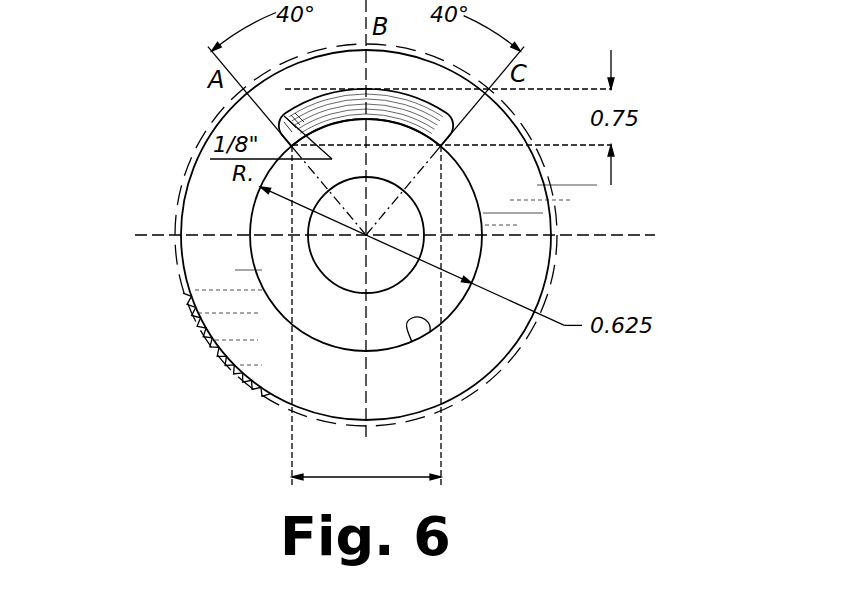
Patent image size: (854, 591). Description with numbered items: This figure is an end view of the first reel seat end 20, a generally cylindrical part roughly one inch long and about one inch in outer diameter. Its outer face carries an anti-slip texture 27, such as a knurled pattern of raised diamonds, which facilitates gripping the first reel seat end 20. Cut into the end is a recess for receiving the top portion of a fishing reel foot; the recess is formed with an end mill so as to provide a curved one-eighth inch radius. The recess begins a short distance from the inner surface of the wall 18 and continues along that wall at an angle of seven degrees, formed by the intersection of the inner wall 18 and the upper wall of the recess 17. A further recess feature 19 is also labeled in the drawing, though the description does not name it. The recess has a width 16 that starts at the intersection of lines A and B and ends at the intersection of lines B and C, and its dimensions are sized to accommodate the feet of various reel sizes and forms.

The width 16 is at (366, 477).
The upper wall of the recess 17 is at (311, 101).
The wall 18 is at (412, 342).
The slot side wall 19 is at (389, 108).
The first reel seat end 20 is at (95, 117).
The anti-slip texture 27 is at (208, 337).